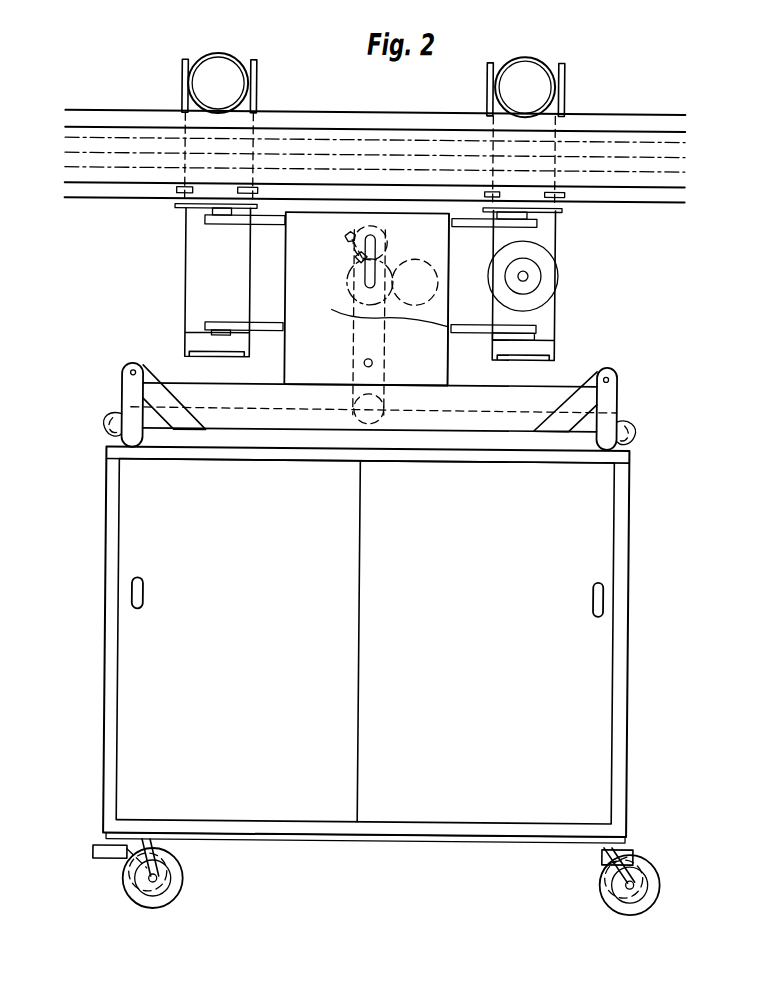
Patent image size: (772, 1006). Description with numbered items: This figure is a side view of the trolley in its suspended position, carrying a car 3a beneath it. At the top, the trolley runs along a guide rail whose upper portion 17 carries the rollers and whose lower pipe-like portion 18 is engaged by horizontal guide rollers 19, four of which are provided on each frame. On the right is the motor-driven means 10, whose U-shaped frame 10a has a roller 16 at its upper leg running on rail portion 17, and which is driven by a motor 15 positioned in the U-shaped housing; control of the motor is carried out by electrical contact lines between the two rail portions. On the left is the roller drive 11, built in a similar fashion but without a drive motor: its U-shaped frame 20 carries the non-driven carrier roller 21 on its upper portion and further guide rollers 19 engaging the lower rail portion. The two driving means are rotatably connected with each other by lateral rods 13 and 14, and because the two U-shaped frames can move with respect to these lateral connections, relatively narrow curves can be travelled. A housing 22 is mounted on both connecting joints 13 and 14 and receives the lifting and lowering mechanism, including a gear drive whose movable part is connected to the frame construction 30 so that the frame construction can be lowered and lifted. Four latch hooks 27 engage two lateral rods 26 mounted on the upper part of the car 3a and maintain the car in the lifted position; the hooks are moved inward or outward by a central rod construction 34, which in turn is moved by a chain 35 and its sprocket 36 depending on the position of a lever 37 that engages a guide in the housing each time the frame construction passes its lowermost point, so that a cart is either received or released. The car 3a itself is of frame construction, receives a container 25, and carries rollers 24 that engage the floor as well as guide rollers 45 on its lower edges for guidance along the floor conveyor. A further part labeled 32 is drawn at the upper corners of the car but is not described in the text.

The portion of the guide rail 17 is at (605, 127).
The non-driven carrier roller 21 is at (205, 66).
The rollers 11 is at (252, 66).
The roller 16 is at (519, 68).
The motor-driven means 10 is at (560, 70).
The pipe-like portion of the guide rail 18 is at (116, 190).
The horizontal guide rollers 19 is at (236, 191).
The lateral rod 13 is at (265, 217).
The U-shaped frame 20 is at (200, 273).
The U-shaped frame 10a is at (548, 318).
The motor 15 is at (527, 276).
The lateral rod 14 is at (282, 328).
The lever 37 is at (341, 256).
The chain 35 is at (360, 363).
The housing 22 is at (447, 367).
The central rod construction 34 is at (253, 412).
The frame construction 30 is at (364, 426).
The sprocket 36 is at (377, 420).
The uprights 32 is at (128, 368).
The latch hooks 27 is at (128, 434).
The lateral rods 26 is at (106, 421).
The car 3a is at (112, 704).
The container 25 is at (148, 630).
The rollers 24 is at (178, 873).
The guide rollers 45 is at (96, 853).